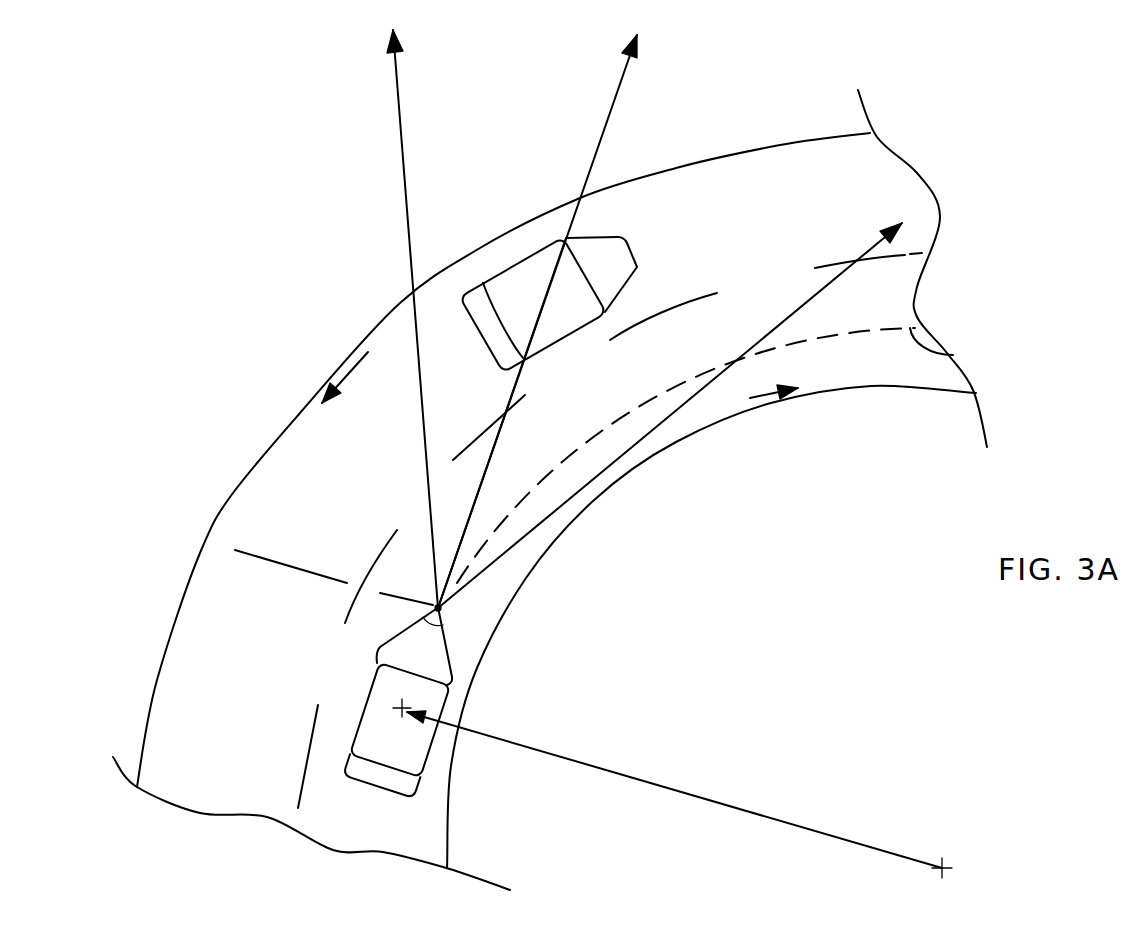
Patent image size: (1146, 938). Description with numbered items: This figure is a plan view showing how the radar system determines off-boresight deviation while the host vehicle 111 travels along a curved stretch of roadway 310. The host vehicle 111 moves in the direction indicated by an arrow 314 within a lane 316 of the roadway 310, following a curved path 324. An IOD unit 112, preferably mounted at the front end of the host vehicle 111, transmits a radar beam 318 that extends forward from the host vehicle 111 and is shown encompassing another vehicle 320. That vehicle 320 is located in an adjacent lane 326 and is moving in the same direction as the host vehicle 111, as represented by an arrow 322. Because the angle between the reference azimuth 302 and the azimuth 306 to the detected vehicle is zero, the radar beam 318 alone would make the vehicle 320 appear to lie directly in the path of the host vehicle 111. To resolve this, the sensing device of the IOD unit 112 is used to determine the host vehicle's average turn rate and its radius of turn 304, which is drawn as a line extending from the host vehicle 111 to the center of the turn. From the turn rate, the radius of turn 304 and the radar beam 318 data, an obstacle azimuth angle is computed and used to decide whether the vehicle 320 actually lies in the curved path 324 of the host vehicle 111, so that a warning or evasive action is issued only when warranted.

The host vehicle 111 is at (452, 677).
The IOD unit 112 is at (445, 611).
The reference azimuth 302 is at (623, 82).
The radius of turn 304 is at (788, 823).
The azimuth 306 is at (602, 143).
The roadway 310 is at (520, 250).
The arrow 314 is at (768, 396).
The lane 316 is at (900, 288).
The radar beam 318 is at (398, 106).
The vehicle 320 is at (633, 247).
The arrow 322 is at (347, 377).
The path 324 is at (953, 355).
The lane 326 is at (905, 190).